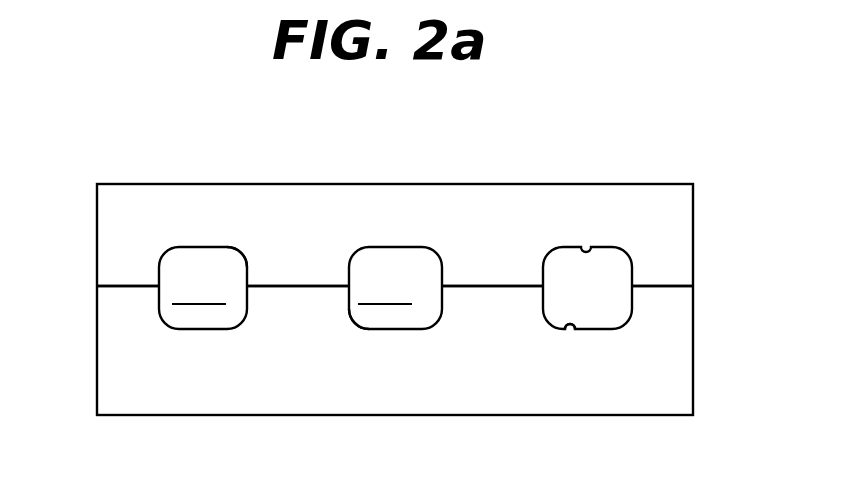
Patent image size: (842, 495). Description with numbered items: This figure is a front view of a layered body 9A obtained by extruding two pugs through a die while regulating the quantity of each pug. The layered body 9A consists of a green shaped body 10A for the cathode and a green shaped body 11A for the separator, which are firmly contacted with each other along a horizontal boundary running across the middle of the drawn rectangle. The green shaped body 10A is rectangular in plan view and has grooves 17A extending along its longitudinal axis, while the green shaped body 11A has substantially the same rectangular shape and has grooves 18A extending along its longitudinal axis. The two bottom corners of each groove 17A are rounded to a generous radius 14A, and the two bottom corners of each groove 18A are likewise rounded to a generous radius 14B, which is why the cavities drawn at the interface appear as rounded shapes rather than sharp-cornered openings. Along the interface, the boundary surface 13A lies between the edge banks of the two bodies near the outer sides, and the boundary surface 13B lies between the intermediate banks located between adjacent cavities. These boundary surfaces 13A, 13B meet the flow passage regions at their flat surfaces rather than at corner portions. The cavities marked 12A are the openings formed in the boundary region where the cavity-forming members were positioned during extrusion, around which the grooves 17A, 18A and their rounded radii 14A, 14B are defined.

The layered body 9A is at (726, 136).
The green shaped body for the cathode 10A is at (700, 210).
The green shaped body for the separator 11A is at (694, 316).
The contact pad 12A is at (300, 288).
The boundary surface 13A is at (130, 287).
The boundary surface 13B is at (506, 286).
The generous radius 14A is at (241, 247).
The generous radius 14B is at (355, 330).
The groove 17A is at (587, 247).
The groove 18A is at (571, 331).